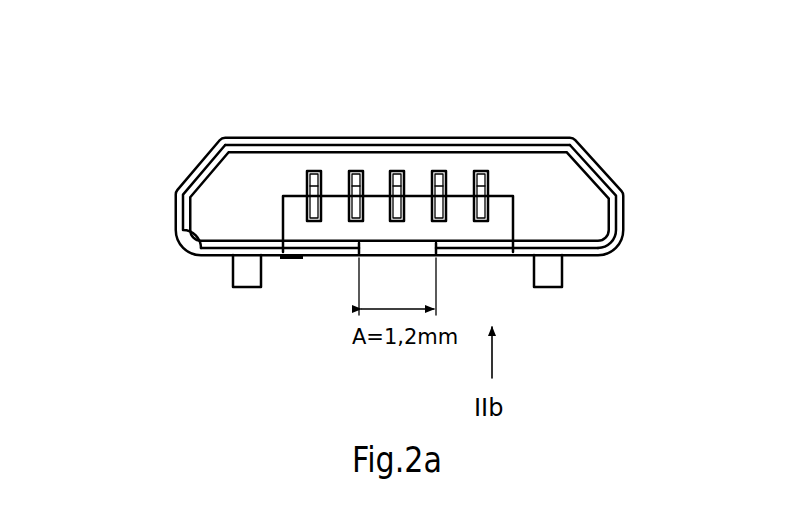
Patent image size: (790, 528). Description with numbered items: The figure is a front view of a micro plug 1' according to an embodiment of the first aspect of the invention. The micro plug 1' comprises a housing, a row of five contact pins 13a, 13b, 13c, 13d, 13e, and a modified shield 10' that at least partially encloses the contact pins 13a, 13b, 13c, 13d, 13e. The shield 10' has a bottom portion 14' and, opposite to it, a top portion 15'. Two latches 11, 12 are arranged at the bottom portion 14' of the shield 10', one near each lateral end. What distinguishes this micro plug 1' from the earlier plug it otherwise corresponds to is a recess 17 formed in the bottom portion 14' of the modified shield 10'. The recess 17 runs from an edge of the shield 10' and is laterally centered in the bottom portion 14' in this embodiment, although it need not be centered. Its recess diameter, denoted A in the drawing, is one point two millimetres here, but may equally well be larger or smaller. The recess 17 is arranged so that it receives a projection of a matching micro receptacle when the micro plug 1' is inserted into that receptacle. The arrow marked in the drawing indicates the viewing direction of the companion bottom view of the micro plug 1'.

The micro plug 1' is at (349, 208).
The modified shield 10' is at (360, 196).
The top portion of shield 15' is at (396, 111).
The bottom portion of shield 14' is at (391, 283).
The recess 17 is at (391, 246).
The contact pin 13a is at (312, 171).
The contact pin 13b is at (355, 171).
The contact pin 13c is at (397, 171).
The contact pin 13d is at (440, 171).
The contact pin 13e is at (484, 171).
The latch 11 is at (247, 275).
The latch 12 is at (550, 272).